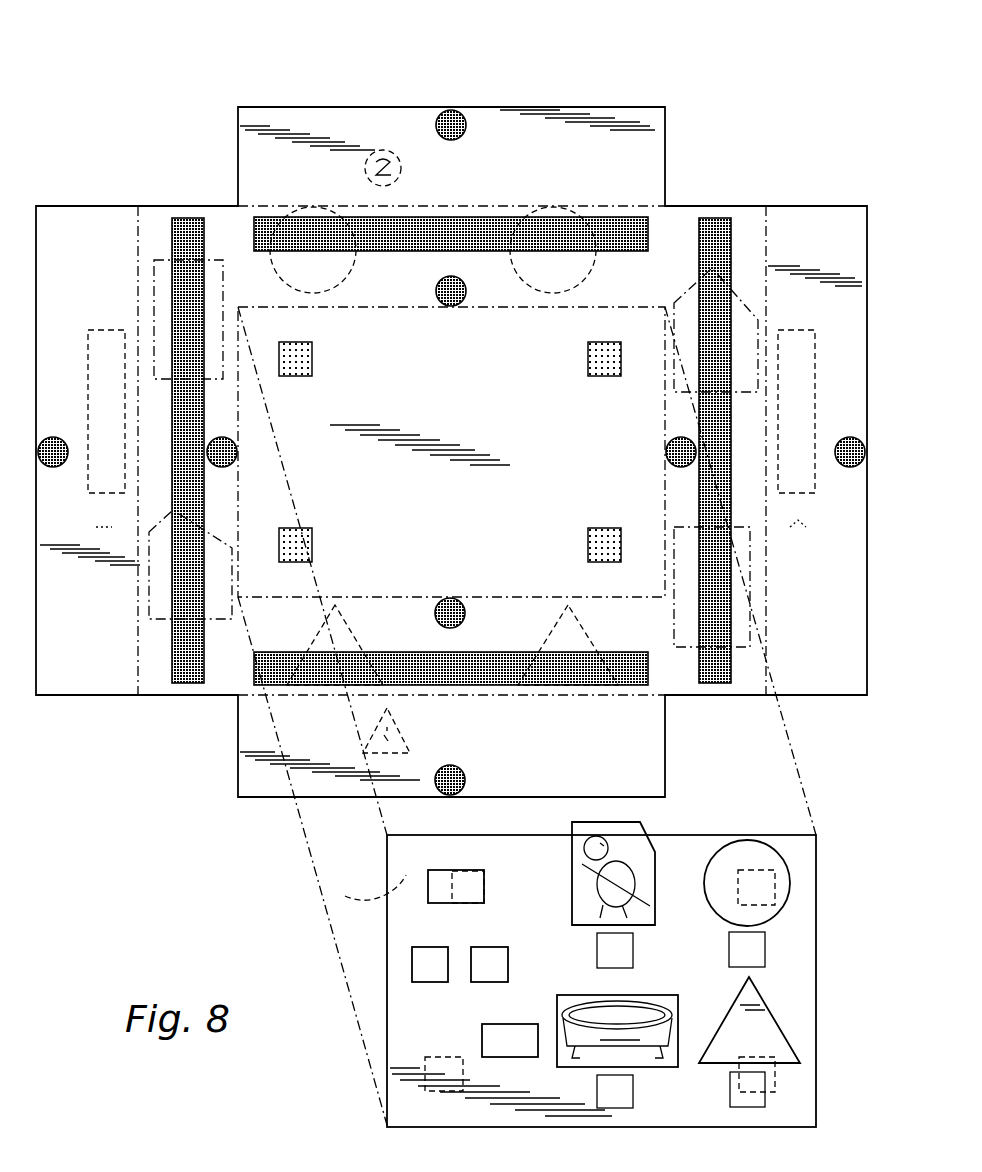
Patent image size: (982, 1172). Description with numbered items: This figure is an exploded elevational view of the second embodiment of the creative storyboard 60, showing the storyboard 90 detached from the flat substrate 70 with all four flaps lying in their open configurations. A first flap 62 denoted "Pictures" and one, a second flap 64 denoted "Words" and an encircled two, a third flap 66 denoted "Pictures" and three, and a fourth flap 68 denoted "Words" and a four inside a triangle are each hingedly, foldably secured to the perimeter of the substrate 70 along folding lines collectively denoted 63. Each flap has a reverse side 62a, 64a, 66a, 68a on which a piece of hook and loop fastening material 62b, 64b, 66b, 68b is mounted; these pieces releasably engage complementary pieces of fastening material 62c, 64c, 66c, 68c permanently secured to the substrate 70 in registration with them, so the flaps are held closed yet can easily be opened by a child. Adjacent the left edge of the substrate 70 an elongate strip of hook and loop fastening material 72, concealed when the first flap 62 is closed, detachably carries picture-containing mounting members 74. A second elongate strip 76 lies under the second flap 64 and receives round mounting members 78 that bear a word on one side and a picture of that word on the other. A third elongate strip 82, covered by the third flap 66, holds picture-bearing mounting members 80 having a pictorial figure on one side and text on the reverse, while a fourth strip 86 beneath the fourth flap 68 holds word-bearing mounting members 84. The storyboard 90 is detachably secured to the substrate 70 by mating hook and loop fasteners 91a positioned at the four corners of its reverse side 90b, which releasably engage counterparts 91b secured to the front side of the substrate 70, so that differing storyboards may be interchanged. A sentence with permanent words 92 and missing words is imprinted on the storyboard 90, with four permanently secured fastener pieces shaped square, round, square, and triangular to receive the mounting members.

The creative storyboard 60 is at (771, 150).
The first flap 62 is at (90, 230).
The reverse side of first flap 62a is at (96, 593).
The hook and loop fastening material piece 62b is at (58, 438).
The complementary fastening material piece 62c is at (238, 455).
The folding lines 63 is at (141, 217).
The second flap 64 is at (238, 128).
The reverse side of second flap 64a is at (594, 187).
The hook and loop fastening material piece 64b is at (468, 127).
The complementary fastening material piece 64c is at (451, 307).
The third flap 66 is at (833, 235).
The reverse side of third flap 66a is at (836, 663).
The hook and loop fastening material piece 66b is at (850, 468).
The complementary fastening material piece 66c is at (666, 452).
The fourth flap 68 is at (650, 758).
The reverse side of fourth flap 68a is at (594, 750).
The hook and loop fastening material piece 68b is at (467, 778).
The complementary fastening material piece 68c is at (449, 598).
The substrate 70 is at (504, 293).
The elongate strip of hook and loop fastening material 72 is at (172, 243).
The picture-containing mounting members 74 is at (154, 292).
The second elongate strip of fastening material 76 is at (264, 224).
The mounting members 78 is at (352, 268).
The picture-bearing mounting members 80 is at (758, 306).
The third elongate strip of fastening material 82 is at (731, 243).
The word-bearing mounting members 84 is at (354, 640).
The fourth strip of fastening material 86 is at (503, 652).
The storyboard 90 is at (398, 856).
The reverse side of storyboard 90b is at (366, 884).
The mating hook and loop fasteners 91a is at (470, 872).
The counterpart fasteners 91b is at (312, 358).
The permanent words 92 is at (484, 889).